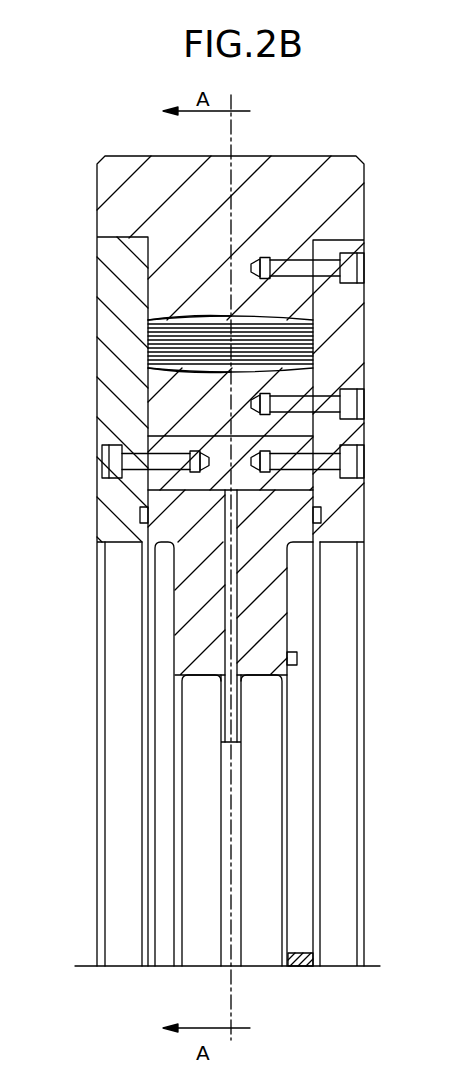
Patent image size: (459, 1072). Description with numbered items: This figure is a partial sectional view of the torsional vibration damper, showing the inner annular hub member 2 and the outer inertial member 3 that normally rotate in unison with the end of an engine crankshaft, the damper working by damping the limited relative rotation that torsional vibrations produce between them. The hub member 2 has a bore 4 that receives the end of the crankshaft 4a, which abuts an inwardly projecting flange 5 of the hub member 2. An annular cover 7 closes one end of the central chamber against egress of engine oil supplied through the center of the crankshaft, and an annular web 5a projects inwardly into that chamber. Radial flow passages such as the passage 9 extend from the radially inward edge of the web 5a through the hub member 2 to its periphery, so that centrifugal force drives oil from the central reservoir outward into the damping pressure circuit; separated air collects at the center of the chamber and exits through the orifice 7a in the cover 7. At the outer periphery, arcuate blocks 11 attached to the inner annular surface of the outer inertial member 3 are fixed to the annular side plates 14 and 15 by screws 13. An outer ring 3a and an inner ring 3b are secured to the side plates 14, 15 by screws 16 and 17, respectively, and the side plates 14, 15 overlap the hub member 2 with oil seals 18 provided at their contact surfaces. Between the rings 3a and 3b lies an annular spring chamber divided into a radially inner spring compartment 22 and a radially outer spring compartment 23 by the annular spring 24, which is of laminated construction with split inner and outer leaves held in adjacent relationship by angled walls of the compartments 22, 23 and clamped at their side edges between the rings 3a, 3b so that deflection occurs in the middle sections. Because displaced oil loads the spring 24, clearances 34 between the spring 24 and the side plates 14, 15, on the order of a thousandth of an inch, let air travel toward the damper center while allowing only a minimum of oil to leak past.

The inner annular hub member 2 is at (277, 616).
The outer inertial member 3 is at (266, 533).
The outer ring 3a is at (340, 197).
The inner ring 3b is at (307, 379).
The bore 4 is at (128, 773).
The crankshaft 4a is at (96, 754).
The inwardly projecting flange 5 is at (187, 633).
The annular web 5a is at (217, 725).
The annular cover 7 is at (302, 789).
The orifice 7a is at (313, 960).
The radial flow passage 9 is at (240, 548).
The arcuate blocks 11 is at (328, 488).
The screws 13 is at (352, 465).
The side plate 14 is at (365, 310).
The side plate 15 is at (97, 388).
The screws 16 is at (348, 270).
The screws 17 is at (347, 403).
The oil seals 18 is at (140, 518).
The inner spring compartment 22 is at (165, 398).
The outer spring compartment 23 is at (150, 330).
The annular spring 24 is at (150, 343).
The clearances 34 is at (148, 350).